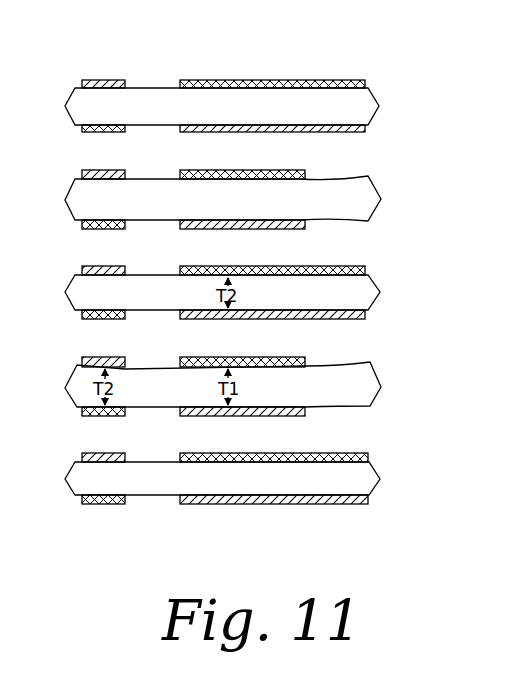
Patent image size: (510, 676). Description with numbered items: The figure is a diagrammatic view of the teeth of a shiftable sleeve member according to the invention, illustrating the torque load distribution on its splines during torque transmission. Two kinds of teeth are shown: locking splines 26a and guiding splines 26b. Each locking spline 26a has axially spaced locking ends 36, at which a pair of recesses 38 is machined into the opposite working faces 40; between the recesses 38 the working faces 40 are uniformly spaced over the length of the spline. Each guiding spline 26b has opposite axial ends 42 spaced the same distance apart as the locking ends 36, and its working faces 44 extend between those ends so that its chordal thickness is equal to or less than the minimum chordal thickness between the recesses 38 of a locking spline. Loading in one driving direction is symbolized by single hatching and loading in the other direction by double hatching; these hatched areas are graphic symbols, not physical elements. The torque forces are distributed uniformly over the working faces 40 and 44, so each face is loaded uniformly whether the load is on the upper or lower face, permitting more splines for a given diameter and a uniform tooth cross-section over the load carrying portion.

The locking splines 26a is at (220, 305).
The guiding splines 26b is at (222, 292).
The locking ends 36 is at (80, 198).
The recesses 38 is at (114, 181).
The working faces 40 is at (228, 176).
The axial ends 42 is at (70, 104).
The working faces 44 is at (283, 272).